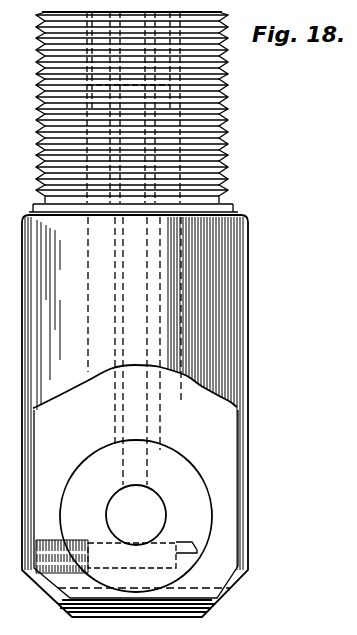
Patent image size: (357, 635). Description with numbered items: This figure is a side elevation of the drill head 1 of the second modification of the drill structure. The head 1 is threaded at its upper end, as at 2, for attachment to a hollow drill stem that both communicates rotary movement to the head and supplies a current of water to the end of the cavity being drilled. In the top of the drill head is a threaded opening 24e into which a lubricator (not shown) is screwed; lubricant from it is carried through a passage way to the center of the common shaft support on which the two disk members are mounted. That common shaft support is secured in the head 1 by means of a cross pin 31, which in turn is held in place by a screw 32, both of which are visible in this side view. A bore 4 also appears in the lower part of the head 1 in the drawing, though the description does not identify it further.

The head 1 is at (225, 250).
The threaded upper end 2 is at (228, 96).
The central bore 4 is at (118, 514).
The threaded opening 24e is at (118, 25).
The cross pin 31 is at (193, 555).
The screw 32 is at (52, 572).